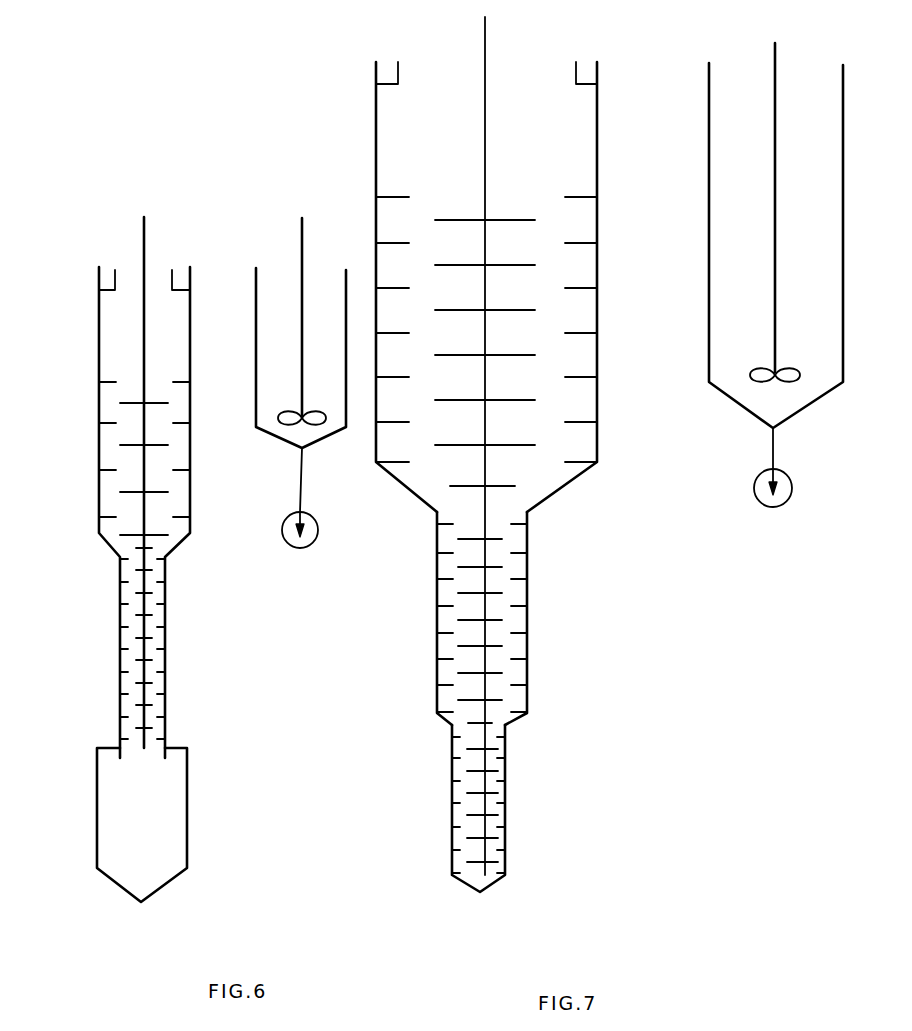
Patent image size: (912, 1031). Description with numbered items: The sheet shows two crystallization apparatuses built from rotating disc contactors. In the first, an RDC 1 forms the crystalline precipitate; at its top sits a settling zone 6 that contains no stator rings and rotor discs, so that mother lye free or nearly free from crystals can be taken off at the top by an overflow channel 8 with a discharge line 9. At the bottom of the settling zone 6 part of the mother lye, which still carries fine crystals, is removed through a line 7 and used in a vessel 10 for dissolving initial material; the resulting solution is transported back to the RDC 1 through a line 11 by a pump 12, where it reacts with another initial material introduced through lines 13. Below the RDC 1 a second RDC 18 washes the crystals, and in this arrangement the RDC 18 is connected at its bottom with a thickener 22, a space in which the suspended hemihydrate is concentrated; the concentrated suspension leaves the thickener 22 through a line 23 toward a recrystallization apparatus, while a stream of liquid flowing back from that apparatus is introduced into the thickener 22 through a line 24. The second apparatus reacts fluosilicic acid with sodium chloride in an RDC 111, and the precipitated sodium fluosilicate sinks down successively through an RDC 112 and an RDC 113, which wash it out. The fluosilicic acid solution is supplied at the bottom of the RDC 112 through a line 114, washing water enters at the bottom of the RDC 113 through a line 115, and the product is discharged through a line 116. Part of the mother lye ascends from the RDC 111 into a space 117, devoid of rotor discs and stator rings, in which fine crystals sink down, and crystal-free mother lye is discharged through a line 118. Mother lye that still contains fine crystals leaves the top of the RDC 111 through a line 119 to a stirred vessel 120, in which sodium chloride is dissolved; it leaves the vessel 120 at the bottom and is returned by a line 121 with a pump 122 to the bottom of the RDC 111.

In FIG. 6, the RDC 1 is at (144, 487).
In FIG. 6, the settling zone 6 is at (144, 424).
In FIG. 6, the line 7 is at (190, 356).
In FIG. 6, the overflow channel 8 is at (144, 268).
In FIG. 6, the discharge line 9 is at (212, 318).
In FIG. 6, the vessel 10 is at (301, 333).
In FIG. 6, the line 11 is at (300, 548).
In FIG. 6, the pump 12 is at (313, 498).
In FIG. 6, the lines 13 is at (88, 548).
In FIG. 6, the RDC 18 is at (158, 643).
In FIG. 6, the thickener 22 is at (142, 825).
In FIG. 6, the line 23 is at (141, 902).
In FIG. 6, the line 24 is at (262, 763).
In FIG. 7, the RDC 111 is at (486, 287).
In FIG. 7, the RDC 112 is at (502, 618).
In FIG. 7, the RDC 113 is at (500, 807).
In FIG. 7, the line 114 is at (427, 722).
In FIG. 7, the line 115 is at (518, 877).
In FIG. 7, the line 116 is at (480, 892).
In FIG. 7, the space 117 is at (516, 446).
In FIG. 7, the line 118 is at (332, 158).
In FIG. 7, the line 119 is at (697, 154).
In FIG. 7, the stirred vessel 120 is at (776, 235).
In FIG. 7, the line 121 is at (773, 506).
In FIG. 7, the pump 122 is at (793, 467).